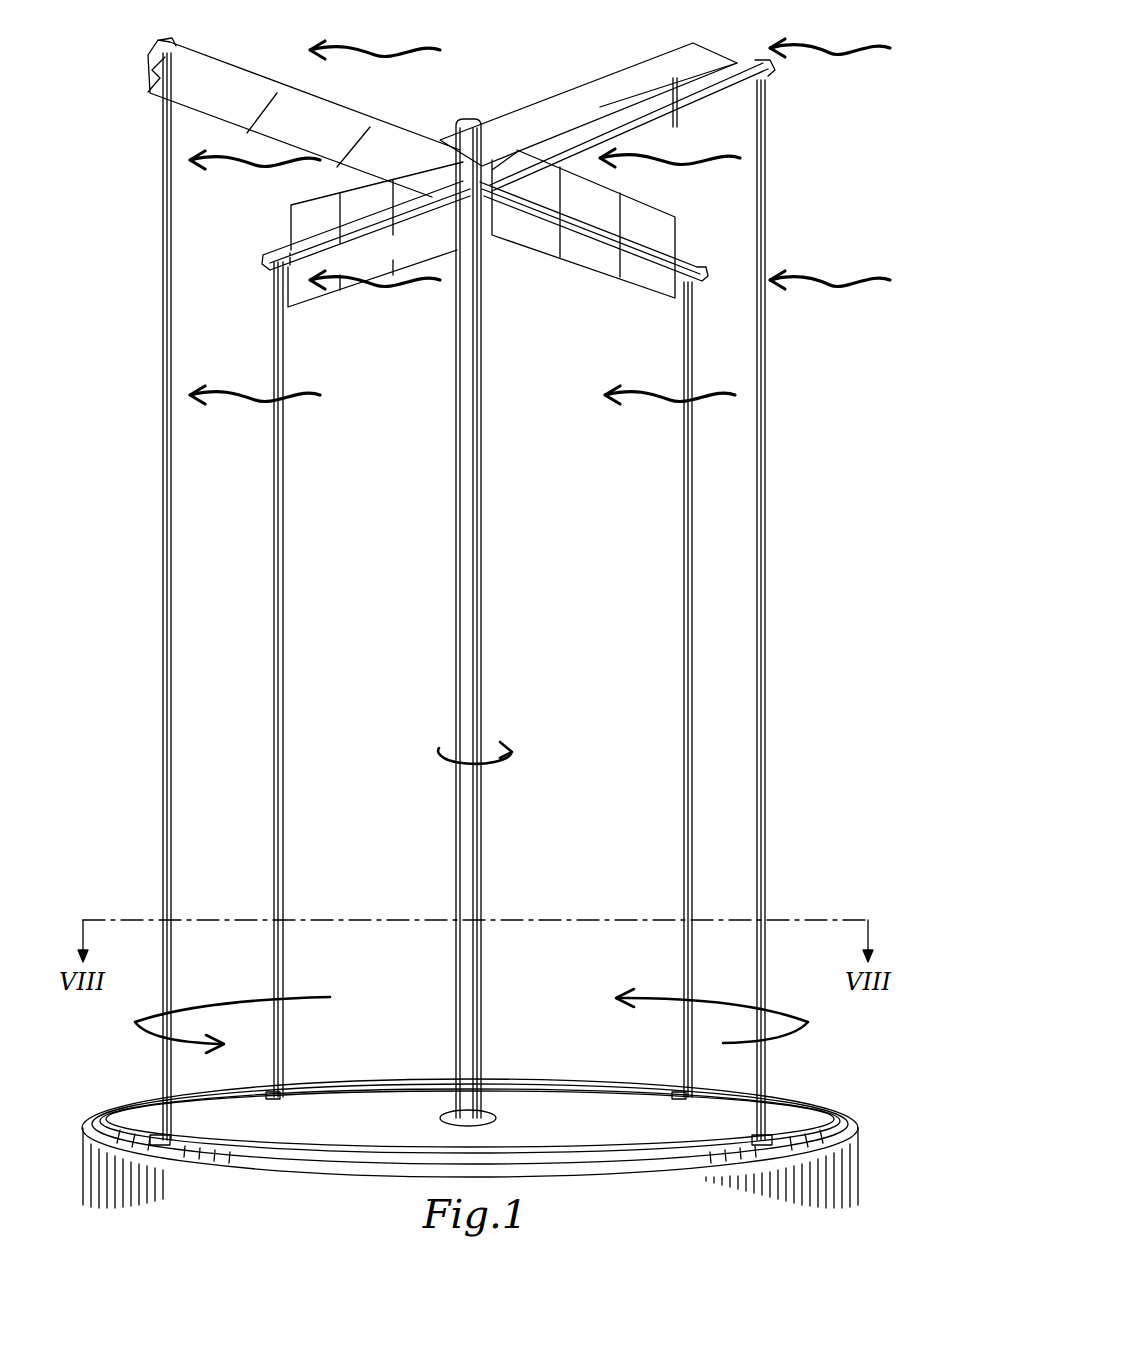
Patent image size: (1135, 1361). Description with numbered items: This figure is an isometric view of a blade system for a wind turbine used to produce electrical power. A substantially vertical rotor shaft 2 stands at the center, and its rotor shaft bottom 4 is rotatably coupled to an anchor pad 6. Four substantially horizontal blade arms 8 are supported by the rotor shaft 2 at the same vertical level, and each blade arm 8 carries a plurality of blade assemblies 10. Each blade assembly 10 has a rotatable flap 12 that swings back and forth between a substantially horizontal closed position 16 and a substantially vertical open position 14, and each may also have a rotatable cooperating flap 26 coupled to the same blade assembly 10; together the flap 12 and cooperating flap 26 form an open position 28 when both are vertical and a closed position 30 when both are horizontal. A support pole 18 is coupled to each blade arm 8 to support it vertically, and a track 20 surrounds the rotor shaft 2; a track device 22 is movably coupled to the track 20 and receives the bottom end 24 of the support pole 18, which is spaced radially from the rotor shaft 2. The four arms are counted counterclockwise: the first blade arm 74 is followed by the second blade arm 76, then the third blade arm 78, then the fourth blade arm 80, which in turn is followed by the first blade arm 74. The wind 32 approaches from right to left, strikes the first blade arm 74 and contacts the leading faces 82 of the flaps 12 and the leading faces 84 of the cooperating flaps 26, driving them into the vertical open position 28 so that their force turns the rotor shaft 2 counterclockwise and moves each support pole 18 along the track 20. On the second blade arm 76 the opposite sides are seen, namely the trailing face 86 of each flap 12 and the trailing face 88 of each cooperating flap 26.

The rotor shaft 2 is at (467, 518).
The rotor shaft bottom 4 is at (490, 1105).
The anchor pad 6 is at (358, 1120).
The blade arm 8 is at (766, 102).
The blade assembly 10 is at (712, 54).
The rotatable flap 12 is at (630, 75).
The open position 14 is at (678, 218).
The closed position 16 is at (500, 132).
The support pole 18 is at (163, 568).
The track 20 is at (430, 1085).
The track device 22 is at (157, 1137).
The bottom end of support pole 24 is at (276, 1088).
The cooperating flap 26 is at (695, 98).
The open position of flap and cooperating flap 28 is at (690, 245).
The closed position of flap and cooperating flap 30 is at (152, 73).
The wind 32 is at (408, 62).
The first blade arm 74 is at (700, 277).
The second blade arm 76 is at (266, 256).
The third blade arm 78 is at (155, 43).
The fourth blade arm 80 is at (775, 68).
The leading face of flap 82 is at (672, 78).
The leading face of cooperating flap 84 is at (679, 90).
The trailing face of flap 86 is at (300, 212).
The trailing face of cooperating flap 88 is at (178, 105).